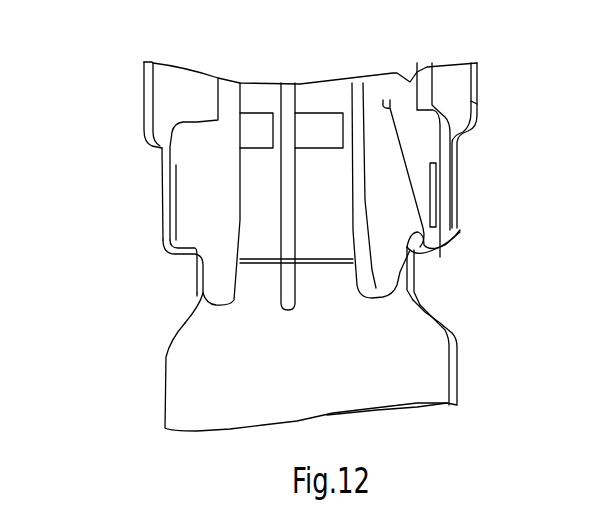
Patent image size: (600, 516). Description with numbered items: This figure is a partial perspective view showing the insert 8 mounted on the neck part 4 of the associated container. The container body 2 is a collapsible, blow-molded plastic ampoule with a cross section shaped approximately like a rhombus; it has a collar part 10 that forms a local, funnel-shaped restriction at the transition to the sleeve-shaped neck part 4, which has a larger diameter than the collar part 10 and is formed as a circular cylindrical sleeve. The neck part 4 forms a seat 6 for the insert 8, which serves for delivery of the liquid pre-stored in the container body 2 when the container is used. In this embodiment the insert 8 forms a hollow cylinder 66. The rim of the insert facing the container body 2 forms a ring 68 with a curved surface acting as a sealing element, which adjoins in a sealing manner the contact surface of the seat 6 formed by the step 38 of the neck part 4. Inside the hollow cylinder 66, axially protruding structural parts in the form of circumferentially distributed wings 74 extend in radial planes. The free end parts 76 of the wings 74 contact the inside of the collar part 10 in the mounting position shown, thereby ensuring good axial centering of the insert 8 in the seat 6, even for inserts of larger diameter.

The insert 8 is at (90, 152).
The neck part 4 is at (163, 188).
The step 38 is at (163, 242).
The collar part 10 is at (197, 277).
The free end parts 76 is at (207, 295).
The wings 74 is at (293, 237).
The hollow cylinder 66 is at (472, 104).
The seat 6 is at (458, 228).
The ring 68 is at (433, 247).
The container body 2 is at (453, 363).